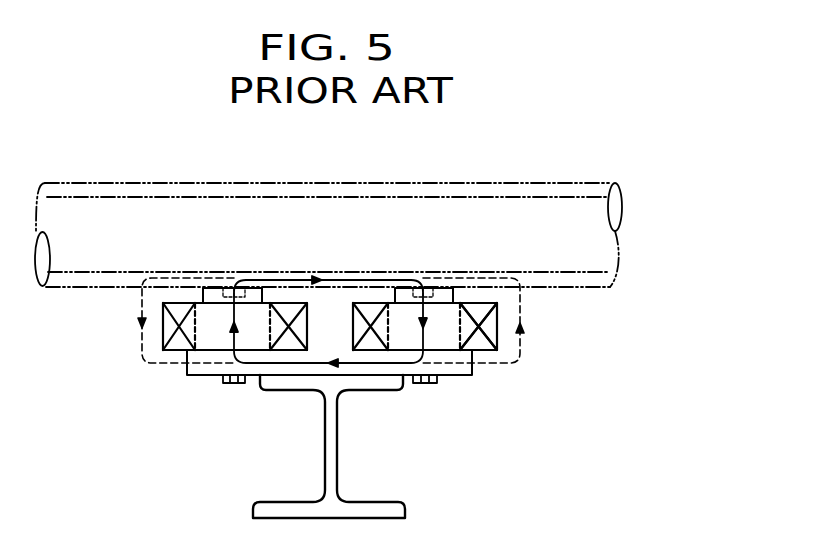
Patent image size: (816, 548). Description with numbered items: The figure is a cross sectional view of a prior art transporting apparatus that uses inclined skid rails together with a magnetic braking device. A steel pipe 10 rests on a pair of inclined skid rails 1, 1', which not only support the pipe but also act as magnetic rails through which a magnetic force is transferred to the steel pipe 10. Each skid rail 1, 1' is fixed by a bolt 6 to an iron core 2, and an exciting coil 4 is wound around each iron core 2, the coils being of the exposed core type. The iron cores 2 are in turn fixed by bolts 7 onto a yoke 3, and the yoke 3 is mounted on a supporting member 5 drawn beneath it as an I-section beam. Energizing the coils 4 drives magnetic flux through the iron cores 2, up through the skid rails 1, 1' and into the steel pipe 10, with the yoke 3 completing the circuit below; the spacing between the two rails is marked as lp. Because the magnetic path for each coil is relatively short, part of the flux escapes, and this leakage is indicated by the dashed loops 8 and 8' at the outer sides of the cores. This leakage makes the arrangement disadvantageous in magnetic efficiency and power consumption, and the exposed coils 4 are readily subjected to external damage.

The steel pipe 10 is at (477, 183).
The inclined skid rail 1 is at (235, 291).
The inclined skid rail 1' is at (425, 290).
The iron core 2 is at (448, 342).
The yoke 3 is at (187, 360).
The exciting coil 4 is at (497, 340).
The supporting member 5 is at (325, 450).
The bolt 6 is at (229, 290).
The bolt 7 is at (425, 383).
The leakage magnetic flux 8 is at (161, 320).
The leakage magnetic flux 8' is at (479, 357).
The pole pitch lp is at (366, 280).